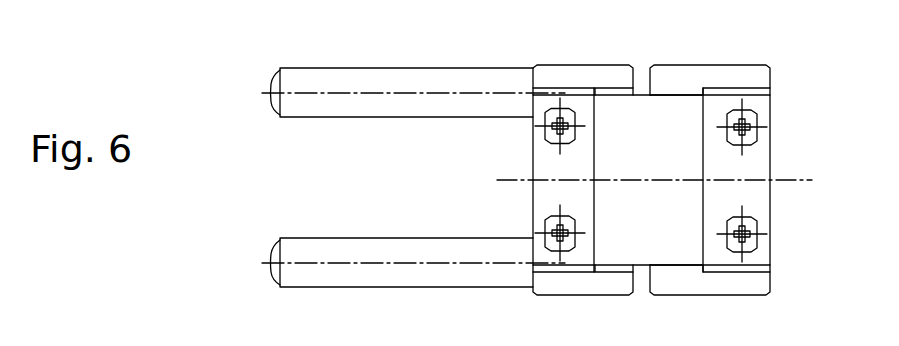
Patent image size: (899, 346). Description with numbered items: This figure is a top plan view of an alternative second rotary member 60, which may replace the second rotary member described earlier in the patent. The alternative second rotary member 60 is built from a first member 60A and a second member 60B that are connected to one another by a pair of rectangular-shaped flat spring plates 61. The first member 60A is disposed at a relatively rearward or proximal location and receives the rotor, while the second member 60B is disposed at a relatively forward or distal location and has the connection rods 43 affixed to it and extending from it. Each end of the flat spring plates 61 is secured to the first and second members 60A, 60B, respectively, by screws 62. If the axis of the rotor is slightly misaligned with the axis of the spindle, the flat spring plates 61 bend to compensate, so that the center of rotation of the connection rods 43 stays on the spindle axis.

The alternative second rotary member 60 is at (473, 181).
The first member 60A is at (708, 63).
The second member 60B is at (581, 63).
The flat spring plate 61 is at (755, 168).
The screw 62 is at (533, 136).
The connection rod 43 is at (345, 119).